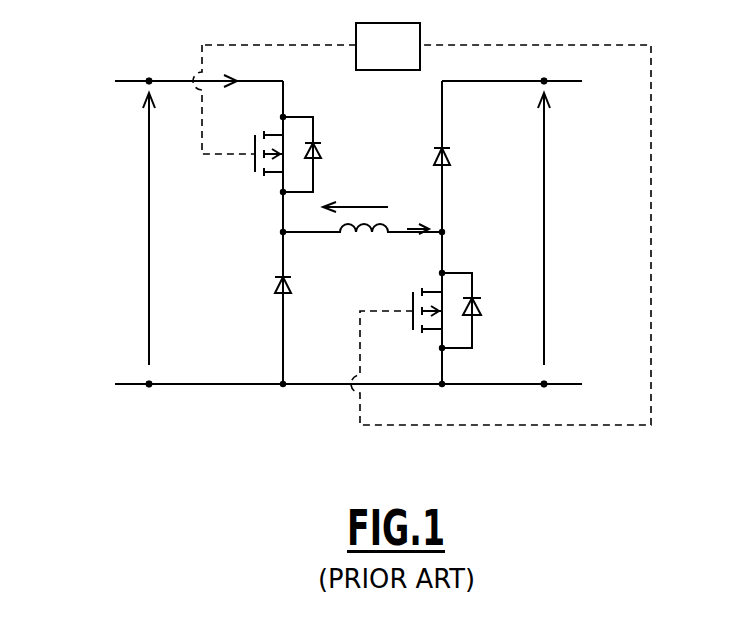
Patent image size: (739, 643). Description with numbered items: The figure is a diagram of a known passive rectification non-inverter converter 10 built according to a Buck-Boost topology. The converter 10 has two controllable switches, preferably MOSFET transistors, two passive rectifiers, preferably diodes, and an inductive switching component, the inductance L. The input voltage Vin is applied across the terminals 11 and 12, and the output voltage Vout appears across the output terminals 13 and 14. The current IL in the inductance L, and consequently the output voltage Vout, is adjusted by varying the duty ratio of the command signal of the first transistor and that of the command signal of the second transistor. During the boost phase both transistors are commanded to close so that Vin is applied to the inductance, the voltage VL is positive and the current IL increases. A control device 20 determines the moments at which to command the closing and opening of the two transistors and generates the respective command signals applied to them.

The passive rectification non-inverter converter 10 is at (62, 212).
The input terminal 11 is at (149, 80).
The input terminal 12 is at (150, 386).
The output terminal 13 is at (544, 80).
The output terminal 14 is at (544, 386).
The control device 20 is at (388, 46).